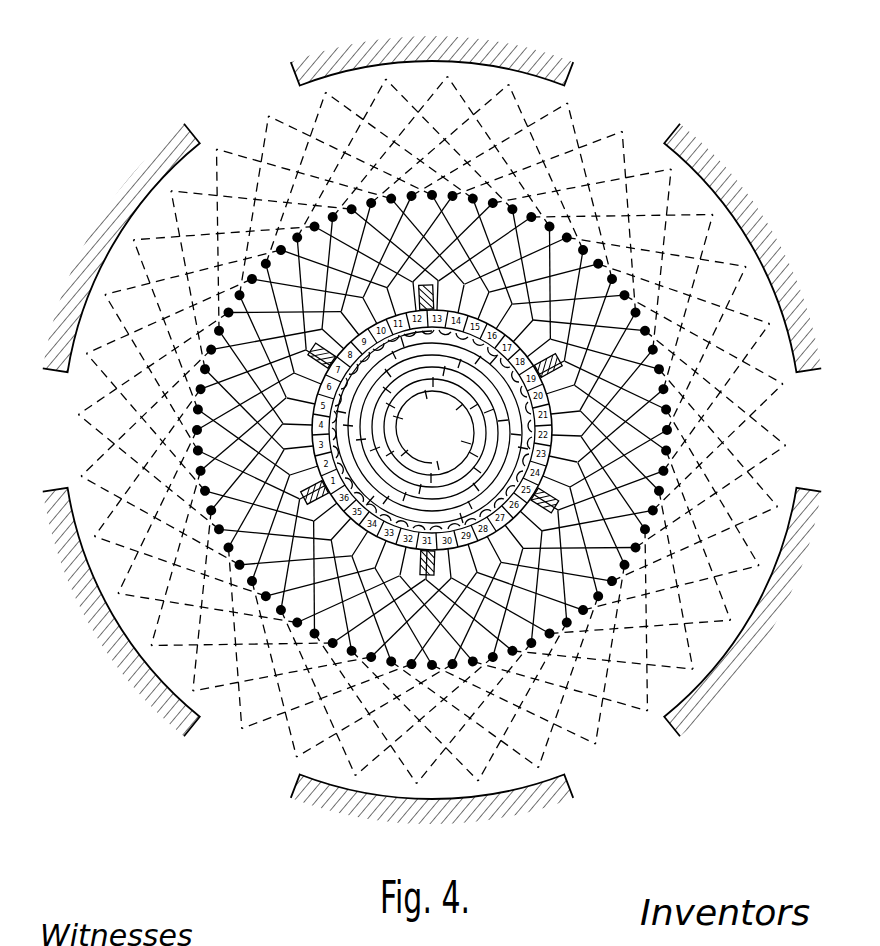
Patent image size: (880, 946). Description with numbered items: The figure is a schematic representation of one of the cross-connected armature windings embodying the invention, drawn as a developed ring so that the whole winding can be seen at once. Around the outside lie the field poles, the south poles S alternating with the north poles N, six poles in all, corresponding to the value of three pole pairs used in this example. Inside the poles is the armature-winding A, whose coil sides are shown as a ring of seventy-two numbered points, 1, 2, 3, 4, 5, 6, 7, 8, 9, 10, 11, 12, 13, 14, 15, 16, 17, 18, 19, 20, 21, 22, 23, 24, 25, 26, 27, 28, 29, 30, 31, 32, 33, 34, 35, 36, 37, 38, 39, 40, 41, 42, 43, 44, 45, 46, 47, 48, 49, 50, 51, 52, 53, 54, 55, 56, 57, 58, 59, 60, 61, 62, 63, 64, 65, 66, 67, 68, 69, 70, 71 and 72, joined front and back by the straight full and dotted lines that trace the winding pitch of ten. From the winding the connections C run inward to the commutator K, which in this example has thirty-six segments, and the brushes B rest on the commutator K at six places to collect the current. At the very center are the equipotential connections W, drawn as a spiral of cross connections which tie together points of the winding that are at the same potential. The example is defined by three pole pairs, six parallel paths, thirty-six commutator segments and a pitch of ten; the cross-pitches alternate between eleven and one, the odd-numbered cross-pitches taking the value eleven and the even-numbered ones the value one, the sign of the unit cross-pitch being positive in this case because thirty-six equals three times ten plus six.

The north pole N is at (432, 368).
The south pole S is at (432, 498).
The armature-winding A is at (445, 434).
The brushes B is at (428, 433).
The connection to the commutator C is at (432, 428).
The commutator K is at (433, 433).
The equipotential connections W is at (432, 427).
The armature conductor 1 is at (202, 396).
The armature conductor 2 is at (206, 483).
The armature conductor 3 is at (211, 357).
The armature conductor 4 is at (200, 443).
The armature conductor 5 is at (227, 320).
The armature conductor 6 is at (201, 402).
The armature conductor 7 is at (249, 286).
The armature conductor 8 is at (209, 363).
The armature conductor 9 is at (277, 257).
The armature conductor 10 is at (224, 326).
The armature conductor 11 is at (310, 232).
The armature conductor 12 is at (246, 291).
The armature conductor 13 is at (346, 214).
The armature conductor 14 is at (272, 261).
The armature conductor 15 is at (385, 202).
The armature conductor 16 is at (304, 235).
The armature conductor 17 is at (425, 197).
The armature conductor 18 is at (340, 217).
The armature conductor 19 is at (465, 200).
The armature conductor 20 is at (379, 204).
The armature conductor 21 is at (504, 209).
The armature conductor 22 is at (419, 198).
The armature conductor 23 is at (542, 225).
The armature conductor 24 is at (459, 199).
The armature conductor 25 is at (576, 247).
The armature conductor 26 is at (498, 207).
The armature conductor 27 is at (605, 275).
The armature conductor 28 is at (536, 222).
The armature conductor 29 is at (629, 308).
The armature conductor 30 is at (571, 244).
The armature conductor 31 is at (647, 344).
The armature conductor 32 is at (601, 270).
The armature conductor 33 is at (659, 383).
The armature conductor 34 is at (626, 302).
The armature conductor 35 is at (664, 423).
The armature conductor 36 is at (646, 338).
The armature conductor 37 is at (662, 463).
The armature conductor 38 is at (658, 377).
The armature conductor 39 is at (652, 502).
The armature conductor 40 is at (664, 417).
The armature conductor 41 is at (636, 540).
The armature conductor 42 is at (662, 457).
The armature conductor 43 is at (614, 574).
The armature conductor 44 is at (654, 496).
The armature conductor 45 is at (586, 603).
The armature conductor 46 is at (639, 534).
The armature conductor 47 is at (554, 627).
The armature conductor 48 is at (618, 569).
The armature conductor 49 is at (518, 645).
The armature conductor 50 is at (591, 599).
The armature conductor 51 is at (479, 657).
The armature conductor 52 is at (559, 624).
The armature conductor 53 is at (439, 662).
The armature conductor 54 is at (524, 644).
The armature conductor 55 is at (398, 660).
The armature conductor 56 is at (485, 656).
The armature conductor 57 is at (359, 650).
The armature conductor 58 is at (445, 662).
The armature conductor 59 is at (322, 634).
The armature conductor 60 is at (404, 660).
The armature conductor 61 is at (288, 612).
The armature conductor 62 is at (365, 652).
The armature conductor 63 is at (259, 584).
The armature conductor 64 is at (328, 637).
The armature conductor 65 is at (234, 552).
The armature conductor 66 is at (293, 616).
The armature conductor 67 is at (216, 516).
The armature conductor 68 is at (263, 589).
The armature conductor 69 is at (204, 477).
The armature conductor 70 is at (237, 557).
The armature conductor 71 is at (199, 437).
The armature conductor 72 is at (219, 522).